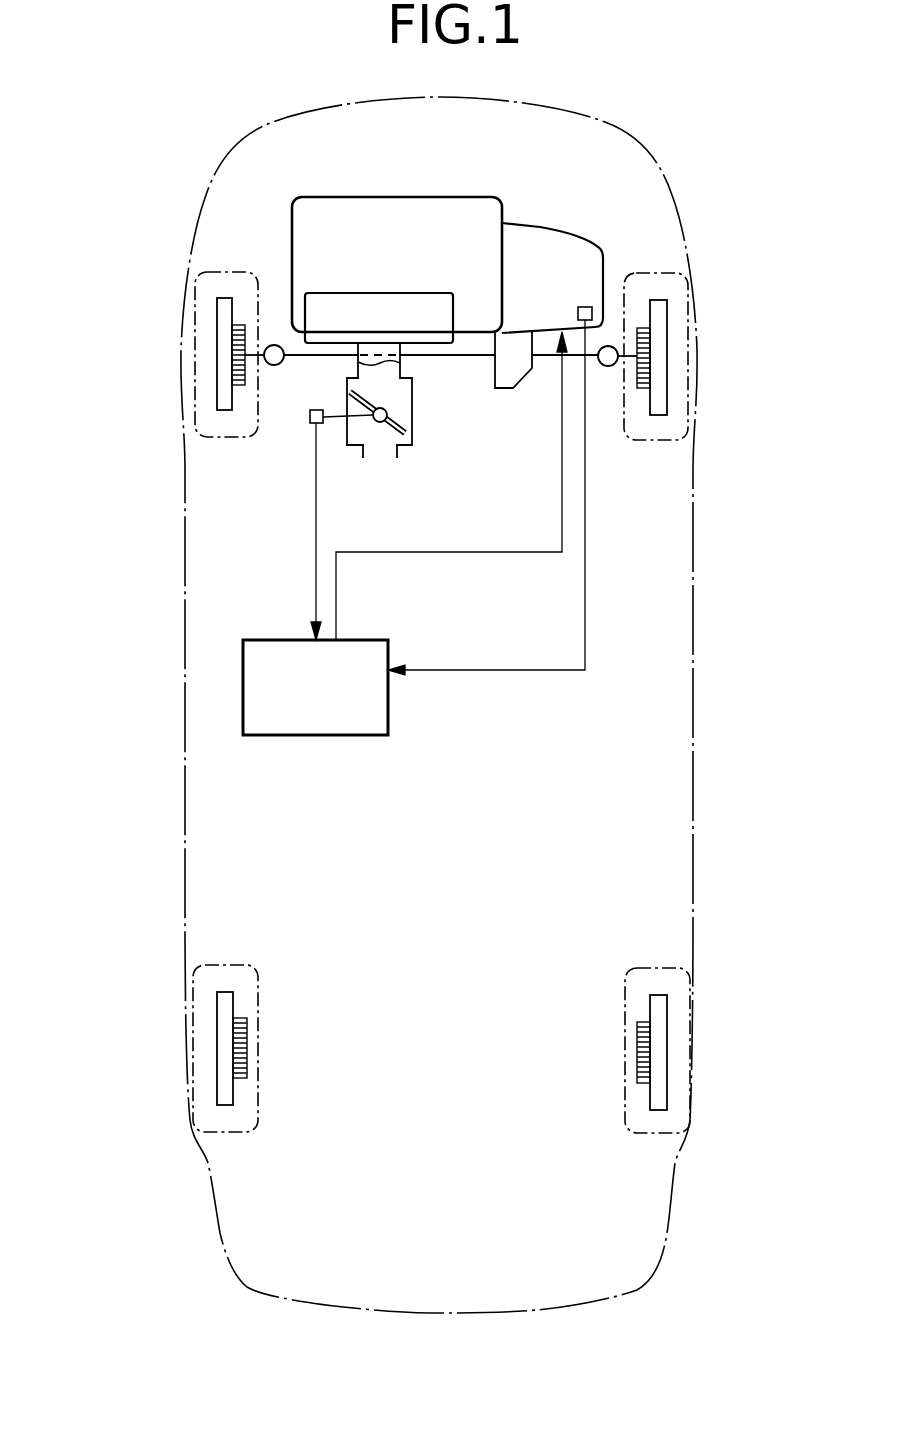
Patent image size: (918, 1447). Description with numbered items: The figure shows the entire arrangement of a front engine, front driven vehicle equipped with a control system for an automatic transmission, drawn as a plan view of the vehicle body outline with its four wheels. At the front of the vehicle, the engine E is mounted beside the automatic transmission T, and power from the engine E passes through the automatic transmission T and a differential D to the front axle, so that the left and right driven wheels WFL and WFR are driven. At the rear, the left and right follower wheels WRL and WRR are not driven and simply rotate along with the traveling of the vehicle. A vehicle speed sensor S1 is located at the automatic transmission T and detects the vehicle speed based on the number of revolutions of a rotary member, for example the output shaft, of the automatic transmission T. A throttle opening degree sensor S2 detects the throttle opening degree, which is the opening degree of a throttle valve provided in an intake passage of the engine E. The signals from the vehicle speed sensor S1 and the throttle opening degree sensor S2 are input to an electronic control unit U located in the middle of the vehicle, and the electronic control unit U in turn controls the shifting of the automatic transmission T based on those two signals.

The engine E is at (388, 197).
The automatic transmission T is at (540, 228).
The differential D is at (510, 373).
The vehicle speed sensor S1 is at (578, 312).
The throttle opening degree sensor S2 is at (310, 417).
The electronic control unit U is at (331, 707).
The left driven wheel WFL is at (190, 340).
The right driven wheel WFR is at (690, 350).
The left follower wheel WRL is at (195, 1033).
The right follower wheel WRR is at (692, 1047).